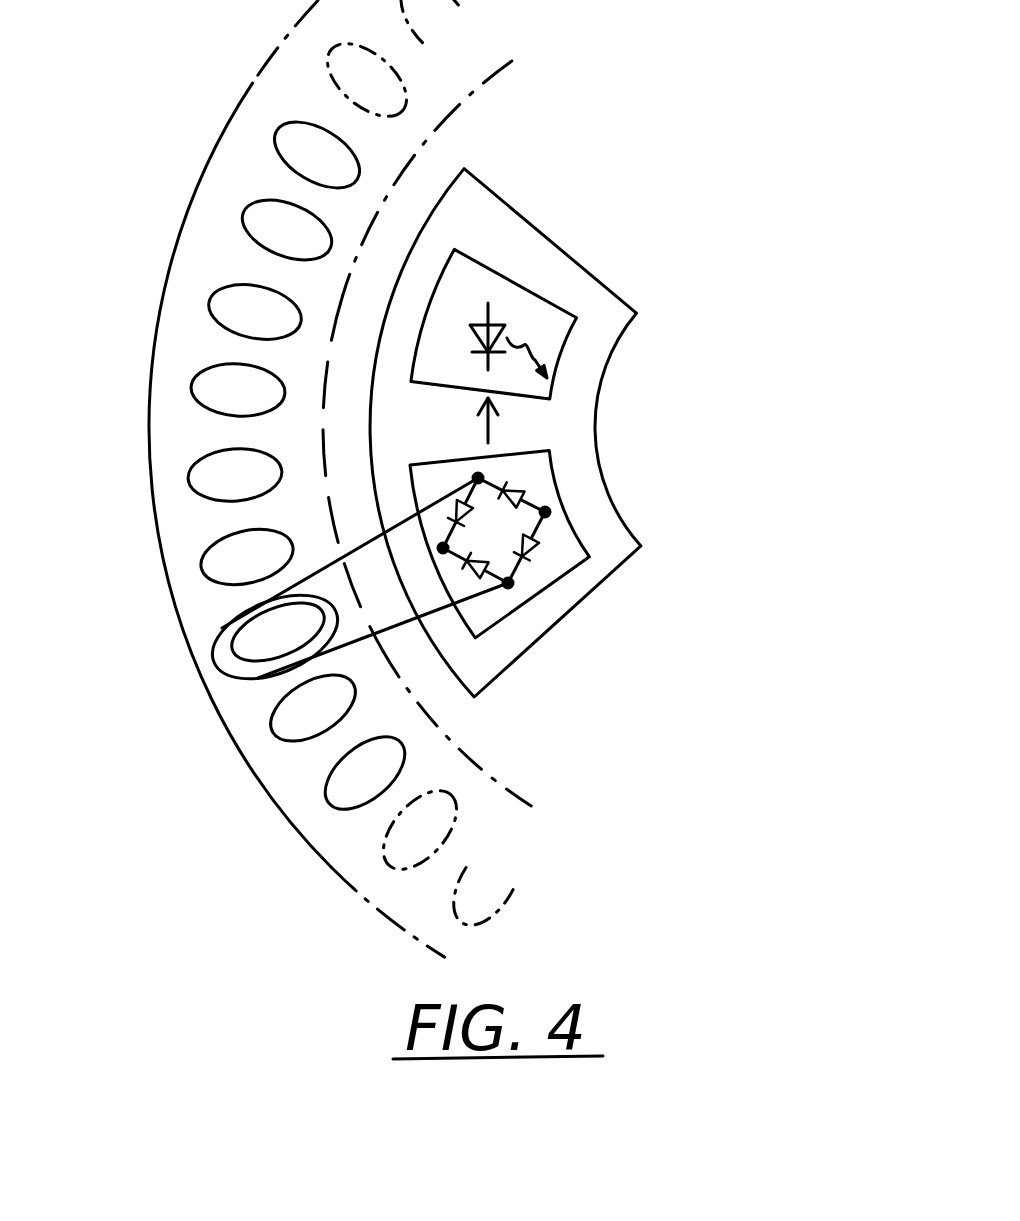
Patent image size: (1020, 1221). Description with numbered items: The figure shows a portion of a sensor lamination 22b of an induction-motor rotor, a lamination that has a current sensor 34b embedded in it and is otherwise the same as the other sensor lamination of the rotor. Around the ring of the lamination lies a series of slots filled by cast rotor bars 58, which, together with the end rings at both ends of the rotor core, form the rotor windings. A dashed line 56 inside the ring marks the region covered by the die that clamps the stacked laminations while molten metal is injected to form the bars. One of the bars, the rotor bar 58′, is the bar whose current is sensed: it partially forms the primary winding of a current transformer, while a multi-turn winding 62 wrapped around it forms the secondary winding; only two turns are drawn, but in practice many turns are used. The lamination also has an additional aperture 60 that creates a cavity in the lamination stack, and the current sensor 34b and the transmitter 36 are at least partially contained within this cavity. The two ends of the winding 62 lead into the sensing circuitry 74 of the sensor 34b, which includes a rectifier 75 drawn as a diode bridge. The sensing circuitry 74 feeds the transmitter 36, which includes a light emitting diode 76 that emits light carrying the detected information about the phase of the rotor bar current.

The sensor lamination 22b is at (205, 166).
The rotor bars 58 is at (230, 308).
The rotor bar 58′ is at (257, 642).
The multi-turn winding 62 is at (263, 685).
The dashed line 56 is at (427, 713).
The additional aperture 60 is at (613, 355).
The transmitter 36 is at (478, 260).
The light emitting diode 76 is at (507, 323).
The sensing circuitry 74 is at (557, 463).
The current sensor 34b is at (543, 510).
The rectifier 75 is at (547, 518).